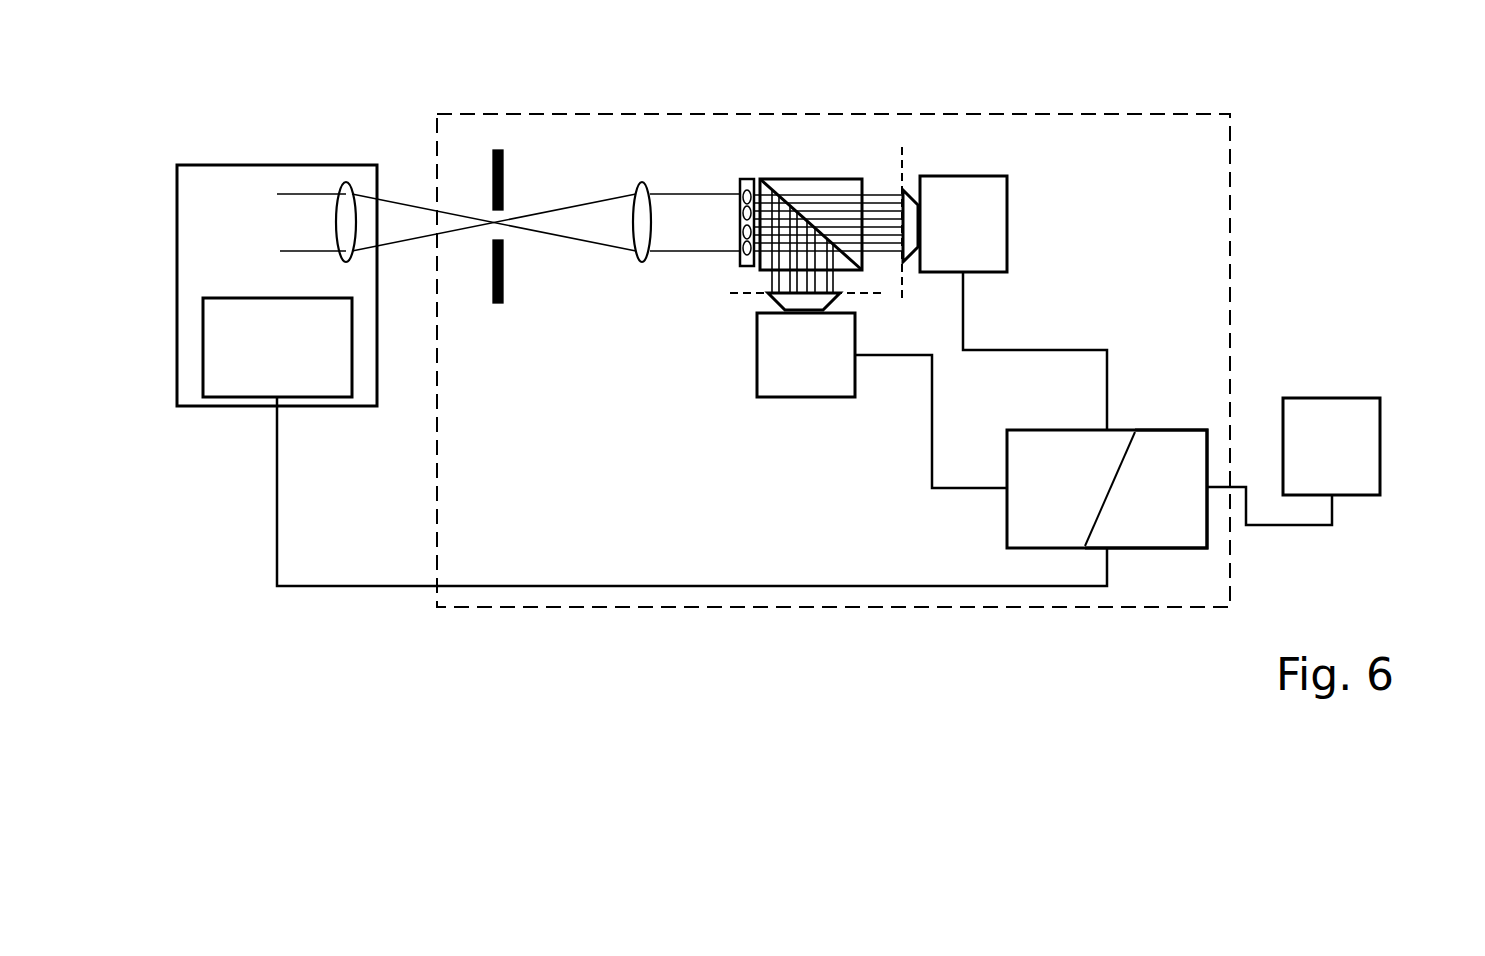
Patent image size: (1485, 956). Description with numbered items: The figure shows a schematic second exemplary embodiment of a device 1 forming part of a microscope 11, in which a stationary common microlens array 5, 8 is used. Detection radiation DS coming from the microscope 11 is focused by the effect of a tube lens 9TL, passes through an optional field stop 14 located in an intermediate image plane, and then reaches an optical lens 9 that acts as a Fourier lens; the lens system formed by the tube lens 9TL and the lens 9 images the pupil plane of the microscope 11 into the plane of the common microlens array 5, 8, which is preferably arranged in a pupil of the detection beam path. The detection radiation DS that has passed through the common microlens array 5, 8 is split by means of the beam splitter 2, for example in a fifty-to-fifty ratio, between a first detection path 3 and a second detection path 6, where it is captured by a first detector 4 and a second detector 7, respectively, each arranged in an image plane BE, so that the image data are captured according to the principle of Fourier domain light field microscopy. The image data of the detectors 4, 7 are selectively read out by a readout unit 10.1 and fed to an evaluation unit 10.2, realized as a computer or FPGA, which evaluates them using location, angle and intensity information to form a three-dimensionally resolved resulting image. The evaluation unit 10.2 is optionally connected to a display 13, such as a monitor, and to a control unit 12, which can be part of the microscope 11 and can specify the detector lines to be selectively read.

The device 1 is at (1104, 99).
The beam splitter 2 is at (845, 177).
The first detection path 3 is at (881, 192).
The first detector 4 is at (951, 245).
The first microlens array 5 is at (747, 160).
The second detection path 6 is at (767, 280).
The second detector 7 is at (792, 375).
The second microlens array 8 is at (743, 177).
The optical lens 9 is at (640, 187).
The tube lens 9TL is at (340, 192).
The readout unit 10.1 is at (1013, 505).
The evaluation unit 10.2 is at (1203, 507).
The microscope 11 is at (242, 270).
The control unit 12 is at (298, 369).
The display 13 is at (1308, 468).
The field stop 14 is at (492, 165).
The detection radiation DS is at (697, 195).
The image plane BE is at (903, 162).